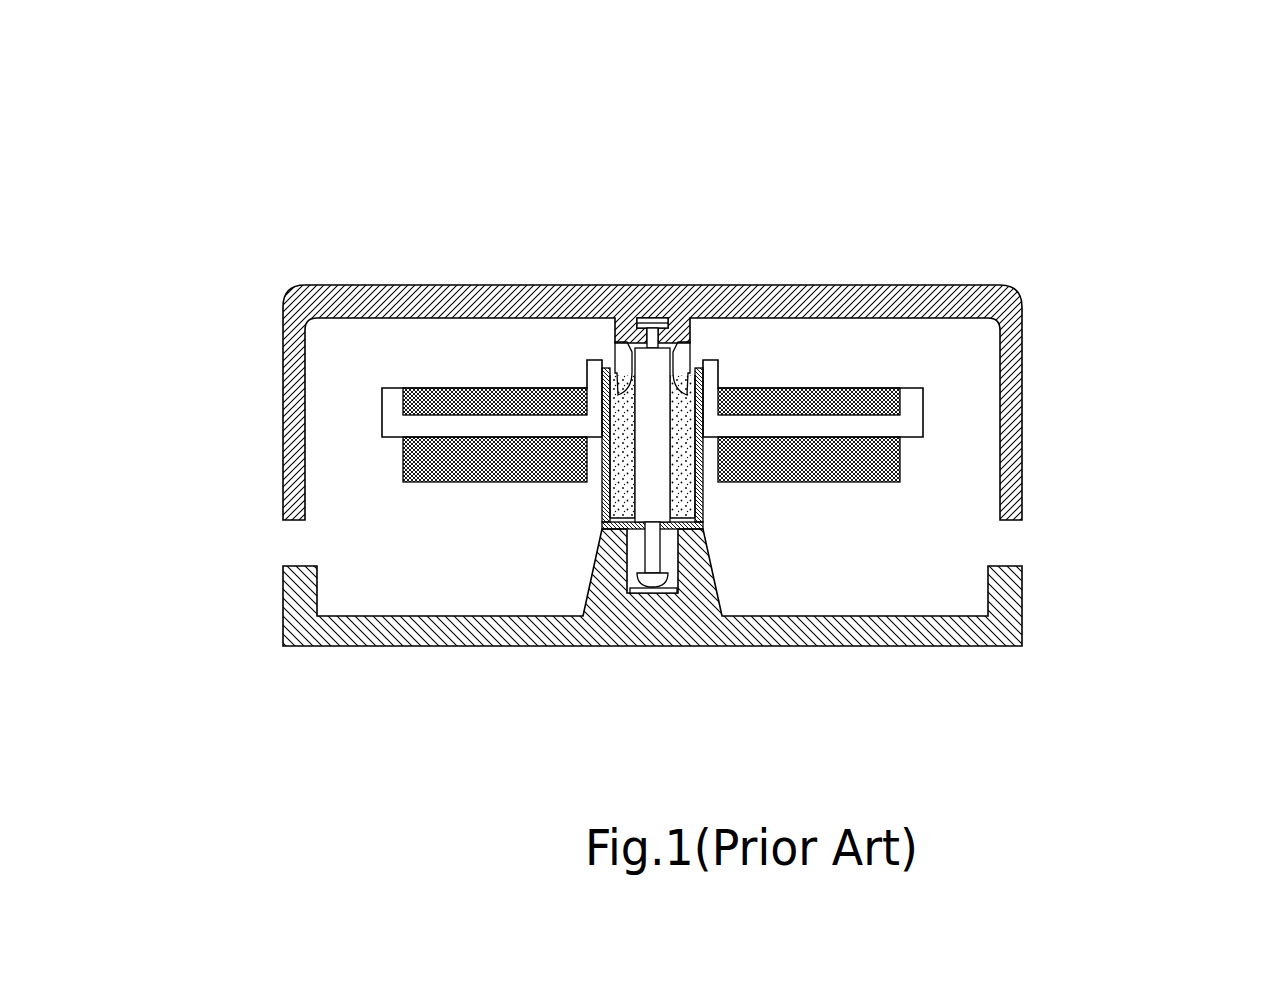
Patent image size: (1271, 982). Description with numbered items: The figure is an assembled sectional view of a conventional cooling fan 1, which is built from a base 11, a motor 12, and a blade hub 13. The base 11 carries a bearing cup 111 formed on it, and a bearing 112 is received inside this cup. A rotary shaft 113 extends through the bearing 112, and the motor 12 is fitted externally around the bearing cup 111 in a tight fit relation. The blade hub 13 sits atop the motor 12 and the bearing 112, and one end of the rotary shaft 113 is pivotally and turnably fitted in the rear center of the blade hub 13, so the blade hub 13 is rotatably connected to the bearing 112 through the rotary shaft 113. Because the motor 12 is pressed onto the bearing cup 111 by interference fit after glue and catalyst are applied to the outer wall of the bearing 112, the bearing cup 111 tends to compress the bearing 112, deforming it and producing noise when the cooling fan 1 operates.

The cooling fan 1 is at (1145, 397).
The base 11 is at (922, 628).
The bearing cup 111 is at (705, 368).
The bearing 112 is at (681, 397).
The rotary shaft 113 is at (655, 365).
The motor 12 is at (488, 398).
The blade hub 13 is at (347, 297).